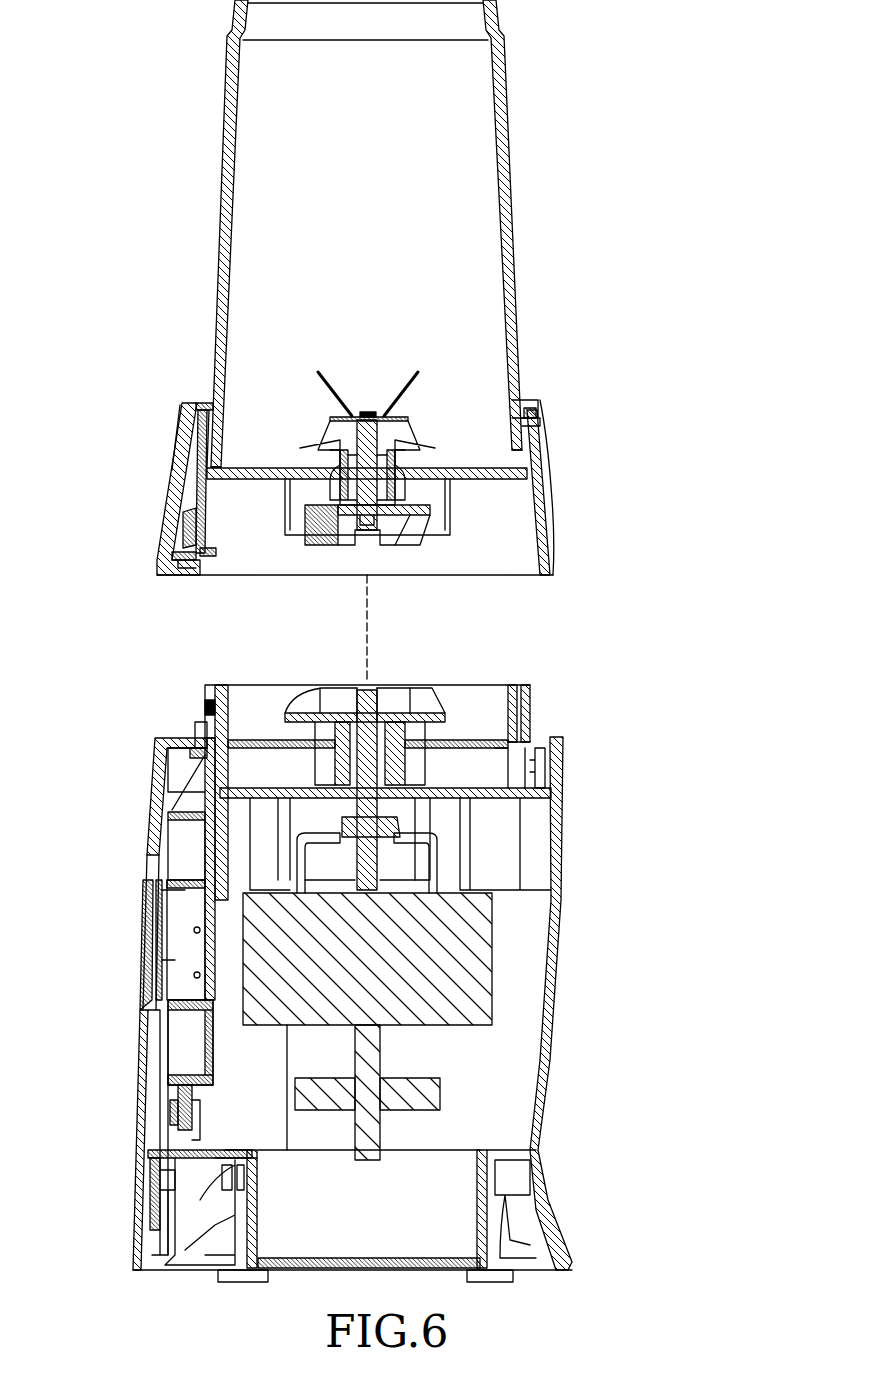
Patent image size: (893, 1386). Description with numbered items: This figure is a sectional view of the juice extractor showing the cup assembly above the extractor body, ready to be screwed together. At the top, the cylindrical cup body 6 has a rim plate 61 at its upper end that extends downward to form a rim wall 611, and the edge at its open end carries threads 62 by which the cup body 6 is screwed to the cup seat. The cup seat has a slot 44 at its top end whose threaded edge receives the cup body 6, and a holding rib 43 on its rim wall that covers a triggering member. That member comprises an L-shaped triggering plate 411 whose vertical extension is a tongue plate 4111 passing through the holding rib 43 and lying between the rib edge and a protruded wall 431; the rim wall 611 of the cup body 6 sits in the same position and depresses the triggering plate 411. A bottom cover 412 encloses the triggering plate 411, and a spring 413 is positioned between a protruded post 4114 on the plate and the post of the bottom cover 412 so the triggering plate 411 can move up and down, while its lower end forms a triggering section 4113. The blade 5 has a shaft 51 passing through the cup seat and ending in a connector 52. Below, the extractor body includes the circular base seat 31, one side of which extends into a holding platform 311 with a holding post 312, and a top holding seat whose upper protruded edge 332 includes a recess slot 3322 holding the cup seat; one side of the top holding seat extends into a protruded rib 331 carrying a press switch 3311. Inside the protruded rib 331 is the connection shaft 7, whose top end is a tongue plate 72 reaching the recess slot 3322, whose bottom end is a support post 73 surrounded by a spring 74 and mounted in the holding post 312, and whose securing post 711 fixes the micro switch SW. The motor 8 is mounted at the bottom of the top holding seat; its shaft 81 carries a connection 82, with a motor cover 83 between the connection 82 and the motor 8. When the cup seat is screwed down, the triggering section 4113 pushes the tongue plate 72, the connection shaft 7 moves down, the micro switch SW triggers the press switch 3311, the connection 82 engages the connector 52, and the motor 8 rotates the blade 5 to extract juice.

The cup body 6 is at (522, 155).
The rim plate 61 is at (538, 402).
The rim wall 611 is at (542, 420).
The threads 62 is at (540, 455).
The blade 5 is at (415, 395).
The shaft 51 is at (360, 440).
The connector 52 is at (405, 530).
The slot 44 is at (258, 465).
The holding rib 43 is at (173, 455).
The tongue plate 4111 is at (178, 425).
The triggering plate 411 is at (192, 483).
The protruded wall 431 is at (198, 402).
The protruded post 4114 is at (183, 538).
The spring 413 is at (176, 552).
The triggering section 4113 is at (212, 558).
The protruded edge 332 is at (212, 688).
The recess slot 3322 is at (205, 710).
The tongue plate 72 is at (200, 725).
The bottom cover 412 is at (190, 752).
The connection shaft 7 is at (200, 812).
The securing post 711 is at (194, 930).
The press switch 3311 is at (156, 935).
The micro switch SW is at (180, 960).
The protruded rib 331 is at (145, 1060).
The spring 74 is at (185, 1098).
The support post 73 is at (183, 1120).
The holding post 312 is at (150, 1165).
The holding platform 311 is at (160, 1205).
The base seat 31 is at (560, 1215).
The connection 82 is at (430, 705).
The shaft 81 is at (400, 770).
The motor cover 83 is at (480, 800).
The motor 8 is at (478, 970).